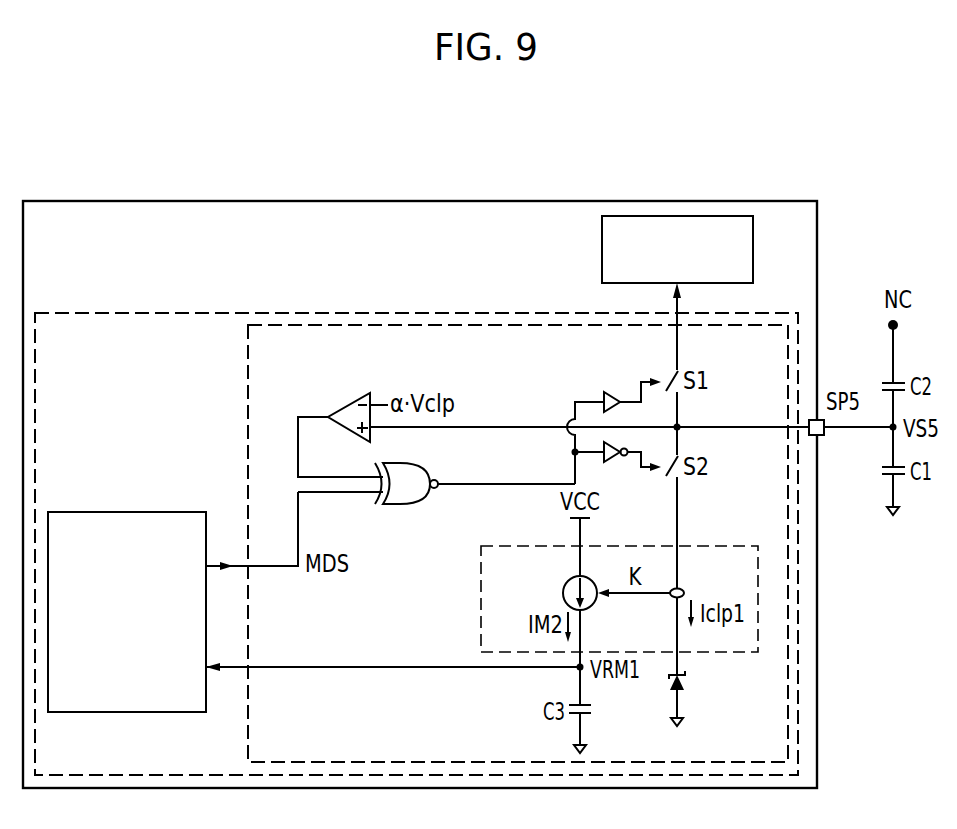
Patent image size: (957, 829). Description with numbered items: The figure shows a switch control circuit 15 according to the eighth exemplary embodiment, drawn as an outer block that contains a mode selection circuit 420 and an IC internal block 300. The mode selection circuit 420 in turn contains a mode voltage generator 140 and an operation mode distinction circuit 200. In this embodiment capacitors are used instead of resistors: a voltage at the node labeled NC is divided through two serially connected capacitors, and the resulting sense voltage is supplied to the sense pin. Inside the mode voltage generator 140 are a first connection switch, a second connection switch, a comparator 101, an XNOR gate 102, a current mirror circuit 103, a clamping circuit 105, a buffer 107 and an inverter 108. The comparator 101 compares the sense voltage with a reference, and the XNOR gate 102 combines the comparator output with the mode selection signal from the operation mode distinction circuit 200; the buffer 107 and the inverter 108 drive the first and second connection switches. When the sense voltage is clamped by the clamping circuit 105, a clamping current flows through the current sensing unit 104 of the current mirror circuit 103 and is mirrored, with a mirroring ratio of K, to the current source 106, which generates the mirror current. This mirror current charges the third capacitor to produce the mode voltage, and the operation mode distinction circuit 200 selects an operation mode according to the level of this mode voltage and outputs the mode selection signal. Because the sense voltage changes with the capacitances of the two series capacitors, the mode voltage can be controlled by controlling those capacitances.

The switch control circuit 15 is at (563, 201).
The mode voltage generator 140 is at (248, 736).
The mode selection circuit 420 is at (430, 313).
The IC internal block 300 is at (602, 247).
The operation mode distinction circuit 200 is at (162, 512).
The comparator 101 is at (352, 397).
The XNOR gate 102 is at (415, 503).
The current mirror circuit 103 is at (481, 597).
The current sensing unit 104 is at (690, 590).
The clamping circuit 105 is at (682, 690).
The current source 106 is at (563, 593).
The buffer 107 is at (604, 392).
The inverter 108 is at (608, 462).